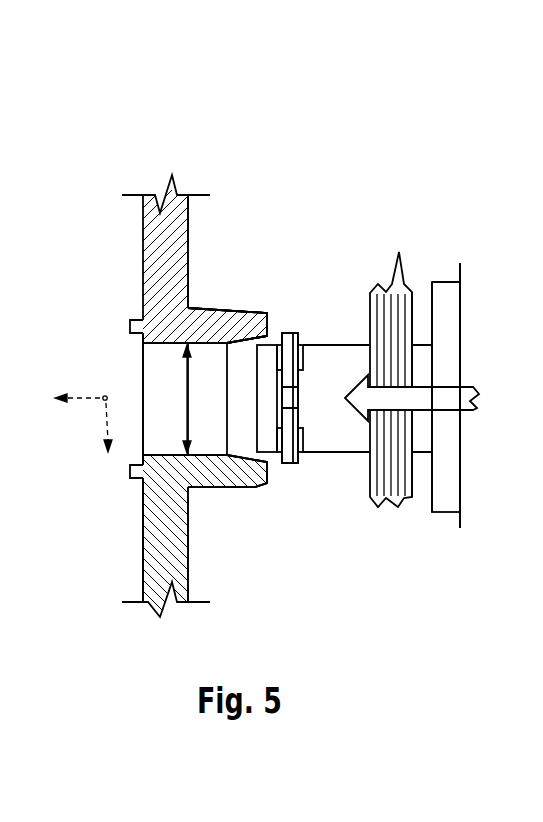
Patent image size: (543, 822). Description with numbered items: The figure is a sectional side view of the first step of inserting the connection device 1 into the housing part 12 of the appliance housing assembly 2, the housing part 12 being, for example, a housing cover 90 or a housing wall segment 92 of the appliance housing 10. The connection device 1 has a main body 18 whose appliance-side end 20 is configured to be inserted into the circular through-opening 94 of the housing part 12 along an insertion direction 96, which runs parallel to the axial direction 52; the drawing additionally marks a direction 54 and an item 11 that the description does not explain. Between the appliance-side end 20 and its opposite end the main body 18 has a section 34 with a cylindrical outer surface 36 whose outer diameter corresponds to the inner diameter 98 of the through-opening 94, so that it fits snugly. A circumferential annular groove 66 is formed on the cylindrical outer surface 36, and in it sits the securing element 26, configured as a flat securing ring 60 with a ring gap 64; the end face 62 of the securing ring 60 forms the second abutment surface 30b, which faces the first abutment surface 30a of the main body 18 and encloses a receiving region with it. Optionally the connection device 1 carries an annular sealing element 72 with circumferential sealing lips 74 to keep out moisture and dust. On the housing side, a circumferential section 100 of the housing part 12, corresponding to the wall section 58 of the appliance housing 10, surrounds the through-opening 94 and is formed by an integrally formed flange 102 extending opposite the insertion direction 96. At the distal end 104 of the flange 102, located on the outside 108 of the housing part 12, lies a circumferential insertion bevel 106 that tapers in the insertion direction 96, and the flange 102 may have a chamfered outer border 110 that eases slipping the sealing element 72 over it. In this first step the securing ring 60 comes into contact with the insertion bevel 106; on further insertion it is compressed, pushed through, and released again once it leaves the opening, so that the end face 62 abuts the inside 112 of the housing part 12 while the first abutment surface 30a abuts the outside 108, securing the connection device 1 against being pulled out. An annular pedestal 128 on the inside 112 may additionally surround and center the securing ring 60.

The connection device 1 is at (279, 116).
The appliance housing assembly 2 is at (354, 56).
The appliance housing 10 is at (206, 154).
The component 11 is at (501, 437).
The housing part 12 is at (168, 253).
The main body 18 is at (424, 433).
The appliance-side end 20 is at (278, 316).
The securing element 26 is at (292, 331).
The first abutment surface 30a is at (428, 337).
The second abutment surface 30b is at (300, 330).
The section 34 is at (346, 455).
The cylindrical outer surface 36 is at (362, 438).
The axial direction 52 is at (72, 395).
The second direction 54 is at (101, 420).
The wall section 58 is at (172, 322).
The securing ring 60 is at (290, 398).
The end face 62 is at (290, 398).
The ring gap 64 is at (290, 398).
The circumferential annular groove 66 is at (305, 440).
The annular sealing element 72 is at (412, 487).
The circumferential sealing lips 74 is at (398, 254).
The housing cover 90 is at (205, 325).
The housing wall segment 92 is at (205, 325).
The circular through-opening 94 is at (118, 374).
The insertion direction 96 is at (422, 388).
The inner diameter 98 is at (184, 408).
The circumferential section 100 is at (205, 325).
The flange 102 is at (208, 322).
The distal end 104 is at (254, 519).
The insertion bevel 106 is at (227, 450).
The outside 108 is at (190, 581).
The chamfered outer border 110 is at (252, 488).
The inside 112 is at (142, 581).
The annular pedestal 128 is at (130, 471).